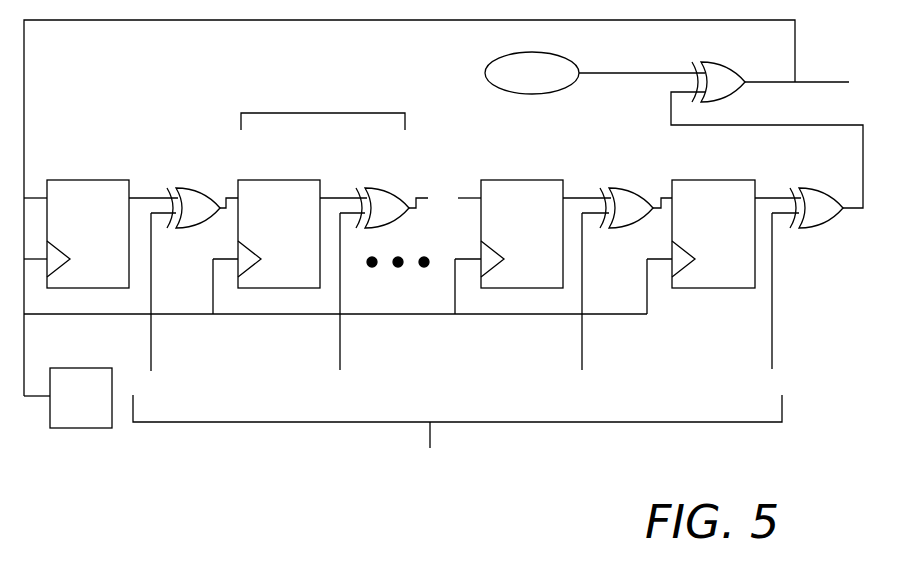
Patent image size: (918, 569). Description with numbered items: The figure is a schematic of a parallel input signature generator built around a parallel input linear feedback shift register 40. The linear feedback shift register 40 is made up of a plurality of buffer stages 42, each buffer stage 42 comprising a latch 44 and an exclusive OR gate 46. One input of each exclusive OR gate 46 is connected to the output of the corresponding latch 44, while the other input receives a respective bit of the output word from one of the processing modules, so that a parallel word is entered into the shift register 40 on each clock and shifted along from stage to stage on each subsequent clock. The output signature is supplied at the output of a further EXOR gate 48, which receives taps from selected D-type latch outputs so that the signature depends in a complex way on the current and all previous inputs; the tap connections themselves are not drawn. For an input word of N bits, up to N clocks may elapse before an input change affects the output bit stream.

The linear feedback shift register 40 is at (446, 261).
The buffer stage 42 is at (321, 113).
The latch 44 is at (298, 178).
The exclusive OR gate 46 is at (387, 188).
The further EXOR gate 48 is at (740, 64).